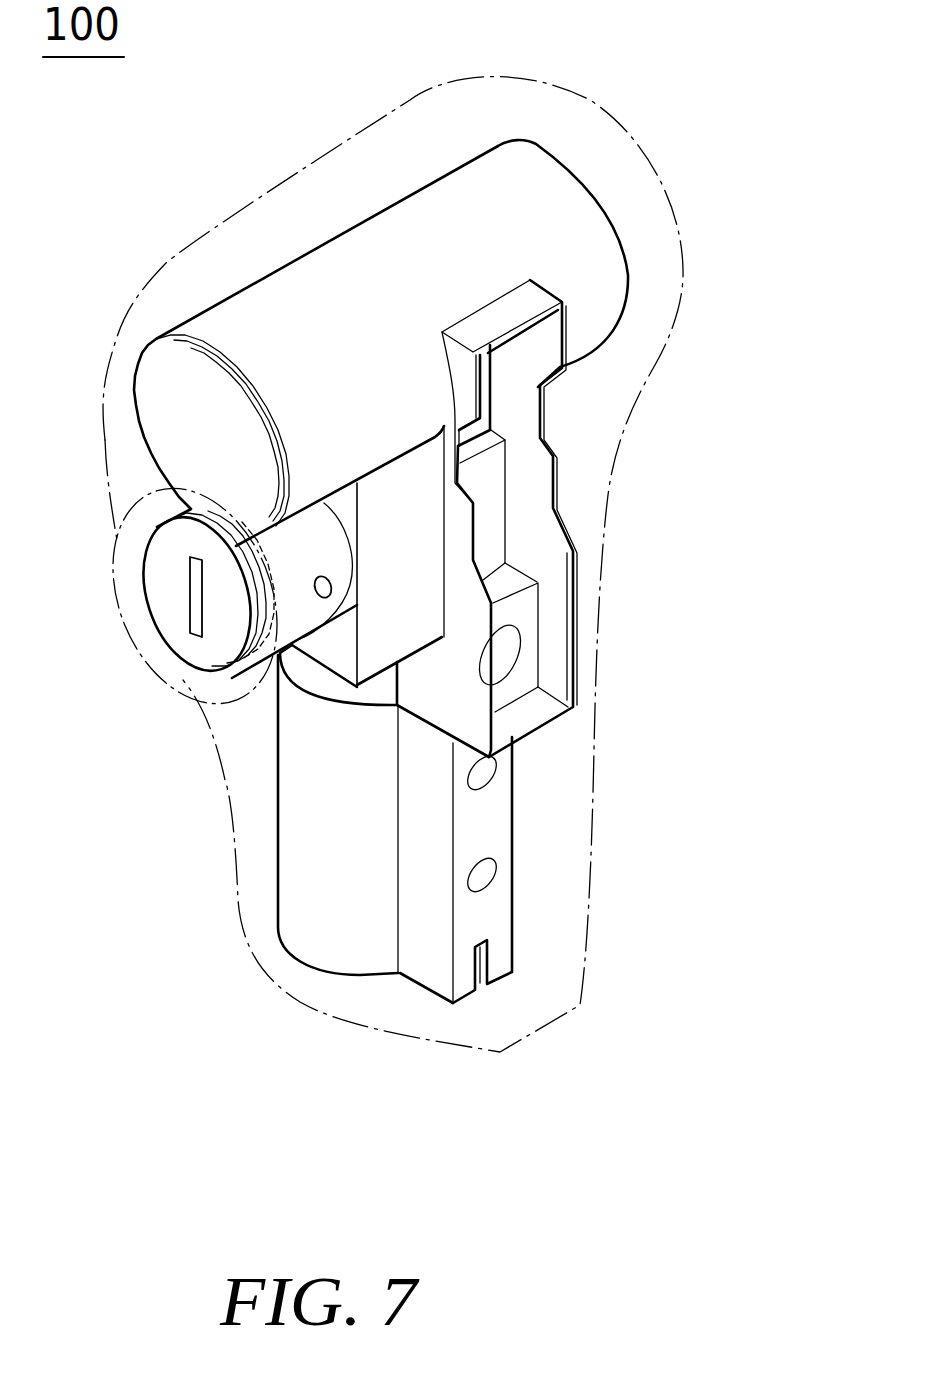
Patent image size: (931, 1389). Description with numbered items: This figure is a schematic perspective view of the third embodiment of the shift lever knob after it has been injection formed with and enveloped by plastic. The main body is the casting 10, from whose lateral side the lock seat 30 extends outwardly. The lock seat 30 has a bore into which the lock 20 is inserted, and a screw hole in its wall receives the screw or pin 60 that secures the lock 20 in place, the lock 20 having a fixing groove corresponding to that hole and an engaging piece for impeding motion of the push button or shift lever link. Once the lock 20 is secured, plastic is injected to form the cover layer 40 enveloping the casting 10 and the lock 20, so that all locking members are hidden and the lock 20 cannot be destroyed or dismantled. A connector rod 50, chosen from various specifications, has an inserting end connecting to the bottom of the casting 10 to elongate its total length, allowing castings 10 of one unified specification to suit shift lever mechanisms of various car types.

The casting 10 is at (312, 275).
The lock 20 is at (170, 578).
The lock seat 30 is at (296, 612).
The cover layer 40 is at (673, 254).
The connector rod 50 is at (488, 832).
The screw or pin 60 is at (325, 598).